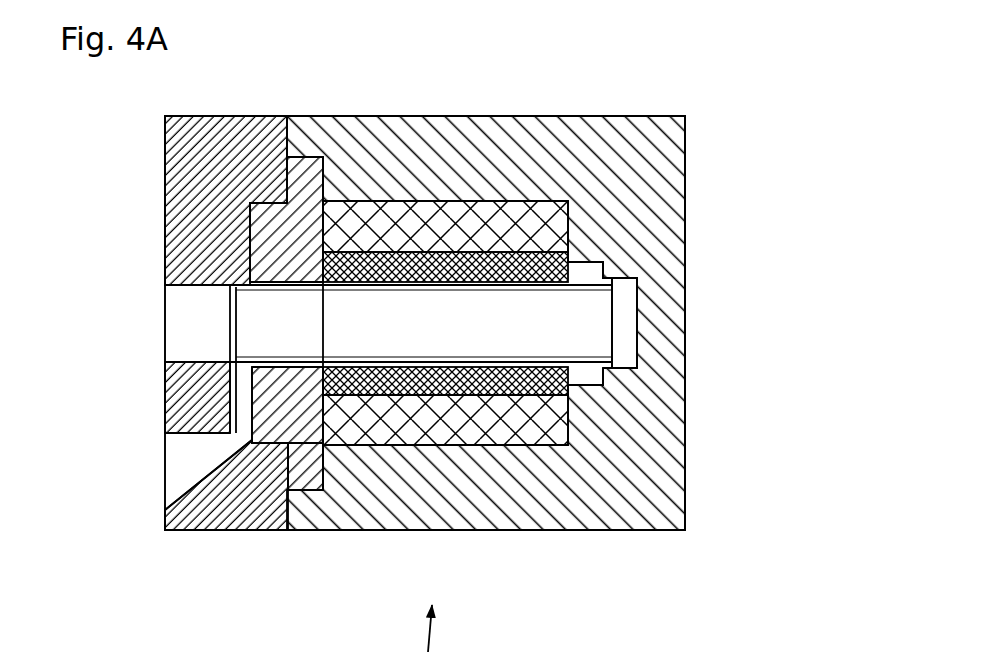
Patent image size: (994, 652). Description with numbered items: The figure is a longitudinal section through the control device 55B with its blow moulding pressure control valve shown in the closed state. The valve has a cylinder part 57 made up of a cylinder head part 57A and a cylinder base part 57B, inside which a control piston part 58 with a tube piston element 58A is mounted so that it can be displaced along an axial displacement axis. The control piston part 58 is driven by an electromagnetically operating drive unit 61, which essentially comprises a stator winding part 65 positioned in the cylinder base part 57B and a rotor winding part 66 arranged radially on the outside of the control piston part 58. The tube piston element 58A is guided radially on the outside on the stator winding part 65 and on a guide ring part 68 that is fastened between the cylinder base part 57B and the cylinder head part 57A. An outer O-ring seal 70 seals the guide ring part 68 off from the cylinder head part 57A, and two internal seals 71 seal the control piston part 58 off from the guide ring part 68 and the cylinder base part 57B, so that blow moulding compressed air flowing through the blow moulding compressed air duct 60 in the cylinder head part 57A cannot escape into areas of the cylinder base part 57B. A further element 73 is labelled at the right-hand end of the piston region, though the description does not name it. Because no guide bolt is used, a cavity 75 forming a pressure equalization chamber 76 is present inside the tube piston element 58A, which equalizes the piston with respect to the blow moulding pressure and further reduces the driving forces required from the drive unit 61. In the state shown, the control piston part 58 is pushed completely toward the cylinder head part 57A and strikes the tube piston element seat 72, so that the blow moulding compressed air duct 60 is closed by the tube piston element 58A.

The control device 55B is at (713, 75).
The cylinder part 57 is at (577, 72).
The cylinder head part 57A is at (233, 535).
The cylinder base part 57B is at (660, 168).
The control piston part 58 is at (307, 362).
The tube piston element 58A is at (252, 358).
The blow moulding compressed air duct 60 is at (208, 327).
The drive unit 61 is at (463, 158).
The stator winding part 65 is at (550, 440).
The rotor winding part 66 is at (552, 385).
The guide ring part 68 is at (305, 475).
The outer O-ring seal 70 is at (253, 437).
The internal seals 71 is at (578, 266).
The tube piston element seat 72 is at (230, 283).
The shaft flange 73 is at (638, 300).
The cavity 75 is at (447, 340).
The pressure equalization chamber 76 is at (572, 327).